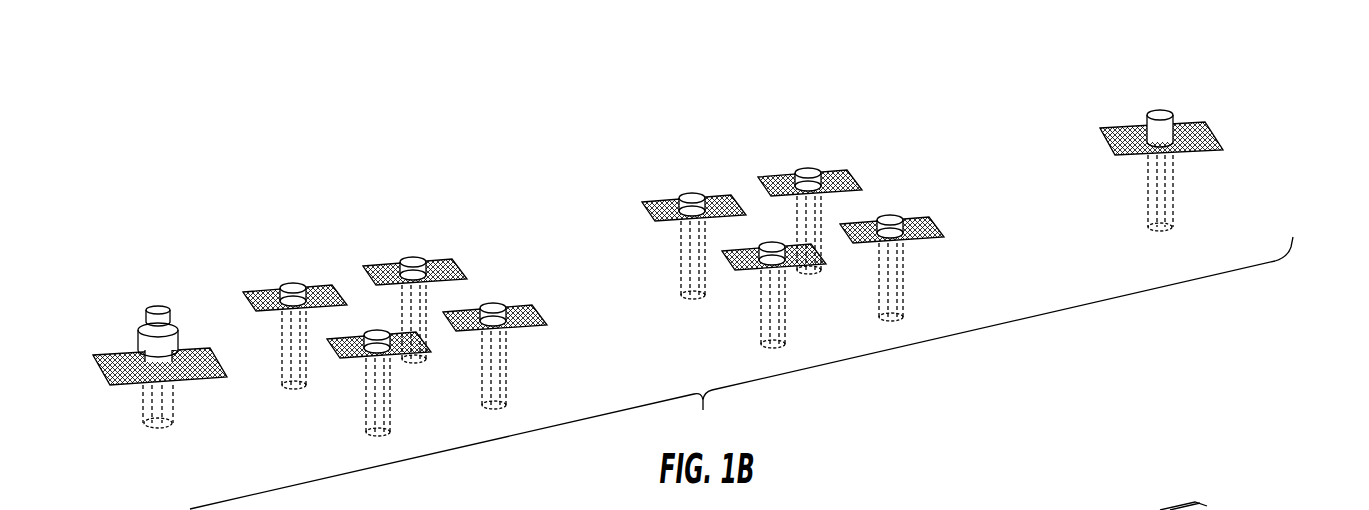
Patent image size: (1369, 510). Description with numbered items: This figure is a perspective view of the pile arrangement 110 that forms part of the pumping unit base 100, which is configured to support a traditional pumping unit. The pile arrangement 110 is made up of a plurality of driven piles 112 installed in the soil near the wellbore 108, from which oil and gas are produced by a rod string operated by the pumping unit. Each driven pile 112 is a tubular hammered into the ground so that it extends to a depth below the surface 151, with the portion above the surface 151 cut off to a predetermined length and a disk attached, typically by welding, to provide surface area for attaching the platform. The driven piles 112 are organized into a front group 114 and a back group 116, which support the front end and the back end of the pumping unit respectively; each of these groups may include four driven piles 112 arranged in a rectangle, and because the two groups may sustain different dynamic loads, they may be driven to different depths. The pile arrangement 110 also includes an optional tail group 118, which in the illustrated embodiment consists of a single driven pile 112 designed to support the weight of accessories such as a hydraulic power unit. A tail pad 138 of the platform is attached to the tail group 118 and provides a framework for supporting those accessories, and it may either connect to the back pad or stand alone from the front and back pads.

The pumping unit base 100 is at (1208, 447).
The wellbore 108 is at (166, 350).
The pile arrangement 110 is at (776, 240).
The driven pile 112 is at (293, 283).
The front group 114 is at (265, 256).
The back group 116 is at (653, 169).
The tail group 118 is at (1130, 110).
The tail pad 138 is at (1127, 508).
The surface 151 is at (245, 303).